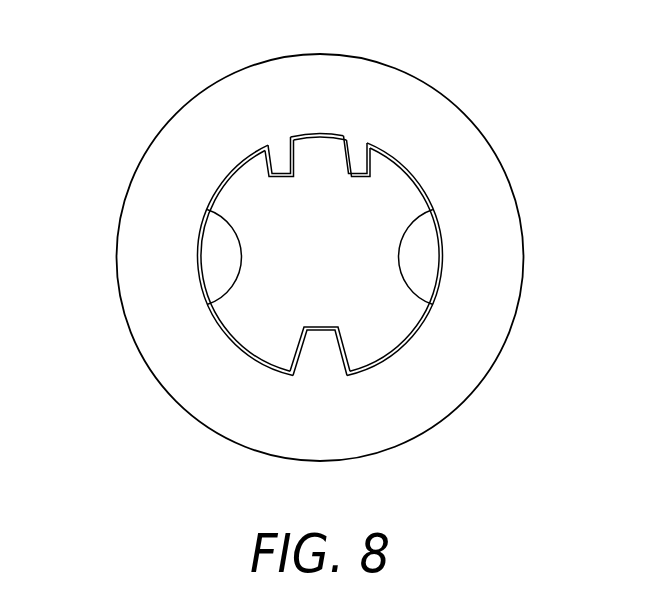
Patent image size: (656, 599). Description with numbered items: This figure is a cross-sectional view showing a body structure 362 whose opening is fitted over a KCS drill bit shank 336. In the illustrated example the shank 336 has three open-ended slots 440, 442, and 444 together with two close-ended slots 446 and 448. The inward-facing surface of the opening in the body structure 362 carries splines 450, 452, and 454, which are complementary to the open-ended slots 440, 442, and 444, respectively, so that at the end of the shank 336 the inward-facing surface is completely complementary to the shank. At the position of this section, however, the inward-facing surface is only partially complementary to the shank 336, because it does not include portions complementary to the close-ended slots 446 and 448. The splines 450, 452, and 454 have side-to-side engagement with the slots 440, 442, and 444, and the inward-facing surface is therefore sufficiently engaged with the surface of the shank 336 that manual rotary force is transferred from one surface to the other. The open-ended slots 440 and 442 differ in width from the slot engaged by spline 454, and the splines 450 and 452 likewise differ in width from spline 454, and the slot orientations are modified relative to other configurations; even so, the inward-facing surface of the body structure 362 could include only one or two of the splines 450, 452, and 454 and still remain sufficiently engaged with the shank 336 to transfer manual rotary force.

The shank 336 is at (398, 193).
The body structure 362 is at (490, 368).
The open-ended slot 440 is at (280, 178).
The open-ended slot 442 is at (355, 178).
The open-ended slot 444 is at (319, 332).
The close-ended slot 446 is at (223, 248).
The close-ended slot 448 is at (422, 250).
The spline 450 is at (286, 170).
The spline 452 is at (357, 170).
The spline 454 is at (319, 332).